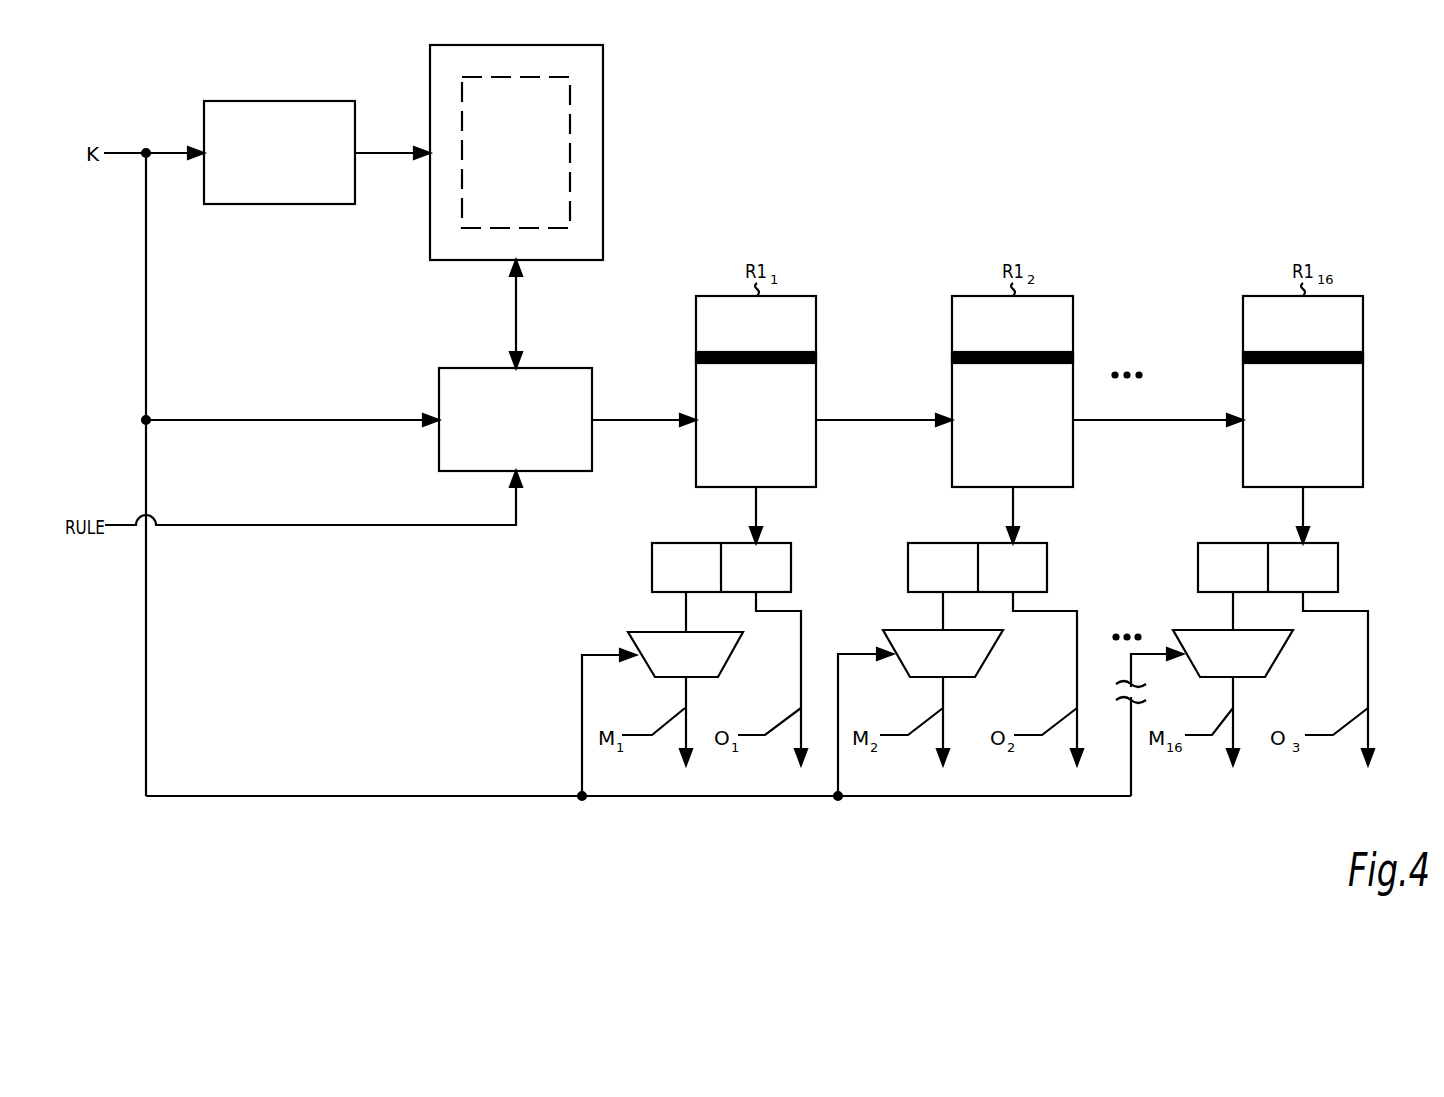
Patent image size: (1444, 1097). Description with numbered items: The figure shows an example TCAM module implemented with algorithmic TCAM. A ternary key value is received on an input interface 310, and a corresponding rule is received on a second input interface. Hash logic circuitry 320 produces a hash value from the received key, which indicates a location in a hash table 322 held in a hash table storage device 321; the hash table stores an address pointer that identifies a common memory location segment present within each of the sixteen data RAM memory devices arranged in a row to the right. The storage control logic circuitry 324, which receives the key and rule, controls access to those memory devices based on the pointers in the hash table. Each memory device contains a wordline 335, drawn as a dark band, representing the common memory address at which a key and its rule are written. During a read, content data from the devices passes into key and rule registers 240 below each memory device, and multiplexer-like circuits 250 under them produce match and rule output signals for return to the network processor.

The input interface 310 is at (120, 152).
The hash logic circuitry 320 is at (280, 101).
The hash table storage device 321 is at (494, 45).
The hash table 322 is at (462, 90).
The storage control logic circuitry 324 is at (455, 368).
The wordline 335 is at (1265, 352).
The key/result register 240 is at (1198, 550).
The multiplexer 250 is at (1183, 630).